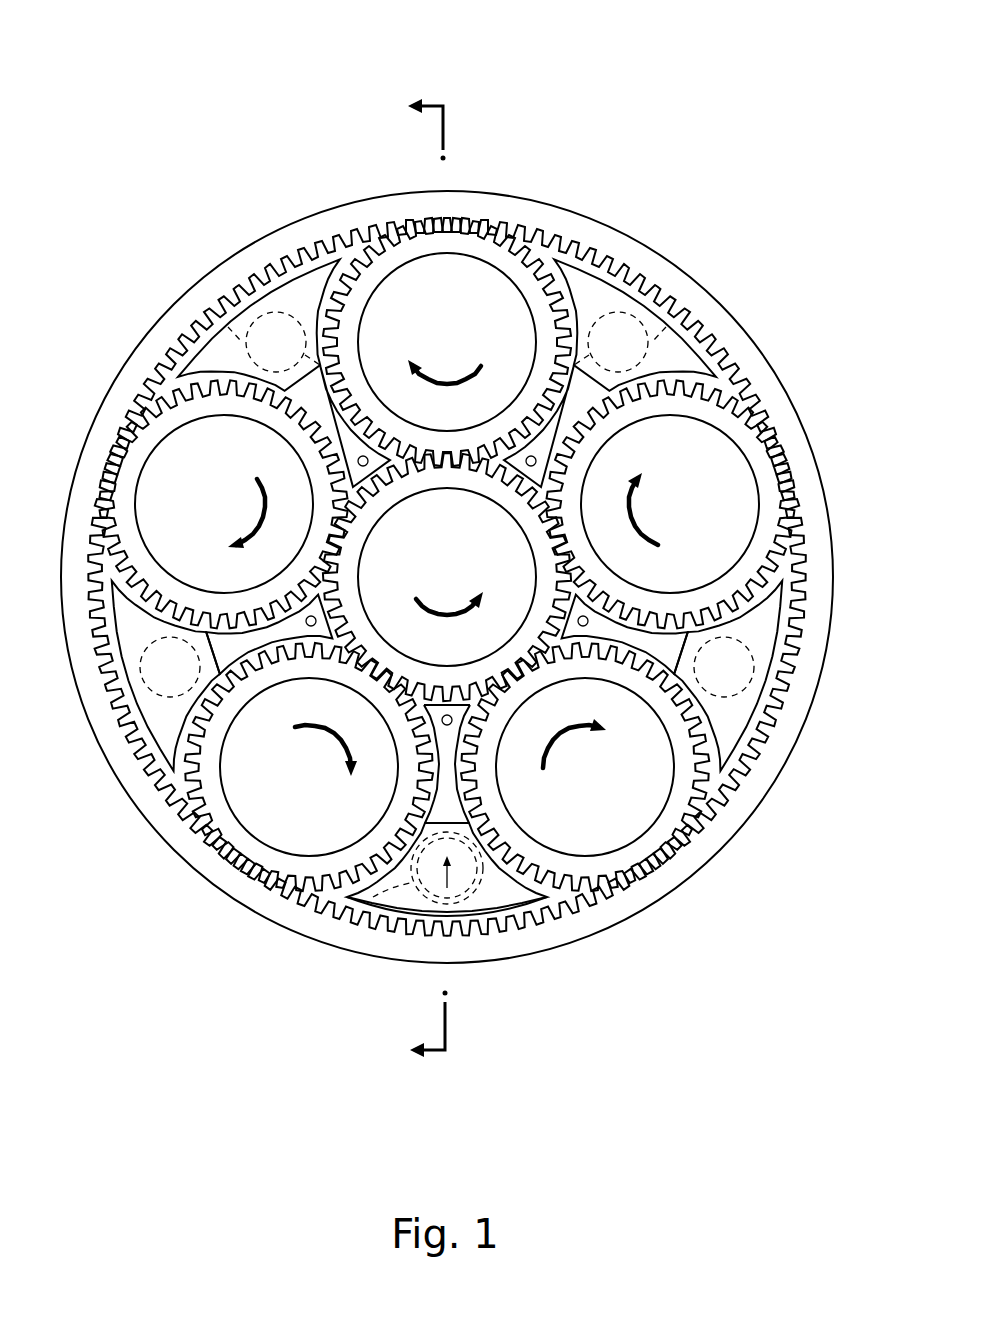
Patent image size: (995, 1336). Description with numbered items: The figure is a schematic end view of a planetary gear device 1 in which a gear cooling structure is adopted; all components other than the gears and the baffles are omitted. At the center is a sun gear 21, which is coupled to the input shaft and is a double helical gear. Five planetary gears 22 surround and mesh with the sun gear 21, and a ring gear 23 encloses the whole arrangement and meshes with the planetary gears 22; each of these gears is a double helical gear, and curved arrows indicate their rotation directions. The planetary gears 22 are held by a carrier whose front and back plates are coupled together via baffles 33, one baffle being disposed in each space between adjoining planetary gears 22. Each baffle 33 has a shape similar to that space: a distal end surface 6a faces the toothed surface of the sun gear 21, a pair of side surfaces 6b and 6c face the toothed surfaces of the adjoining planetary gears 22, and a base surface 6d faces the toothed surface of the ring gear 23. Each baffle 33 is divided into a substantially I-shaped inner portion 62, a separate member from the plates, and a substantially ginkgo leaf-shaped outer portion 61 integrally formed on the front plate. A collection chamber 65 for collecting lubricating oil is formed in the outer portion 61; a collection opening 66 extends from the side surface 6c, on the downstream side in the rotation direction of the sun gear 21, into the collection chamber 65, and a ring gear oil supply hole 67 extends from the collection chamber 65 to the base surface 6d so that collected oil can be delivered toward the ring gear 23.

The planetary gear device 1 is at (517, 128).
The sun gear 21 is at (447, 480).
The planetary gears 22 is at (446, 248).
The ring gear 23 is at (603, 245).
The baffles 33 is at (448, 661).
The outer portion 61 is at (442, 857).
The inner portion 62 is at (441, 946).
The distal end surface 6a is at (447, 705).
The side surface 6b is at (434, 760).
The side surface 6c is at (461, 760).
The base surface 6d is at (515, 905).
The collection chamber 65 is at (450, 900).
The collection opening 66 is at (475, 885).
The ring gear oil supply hole 67 is at (400, 897).